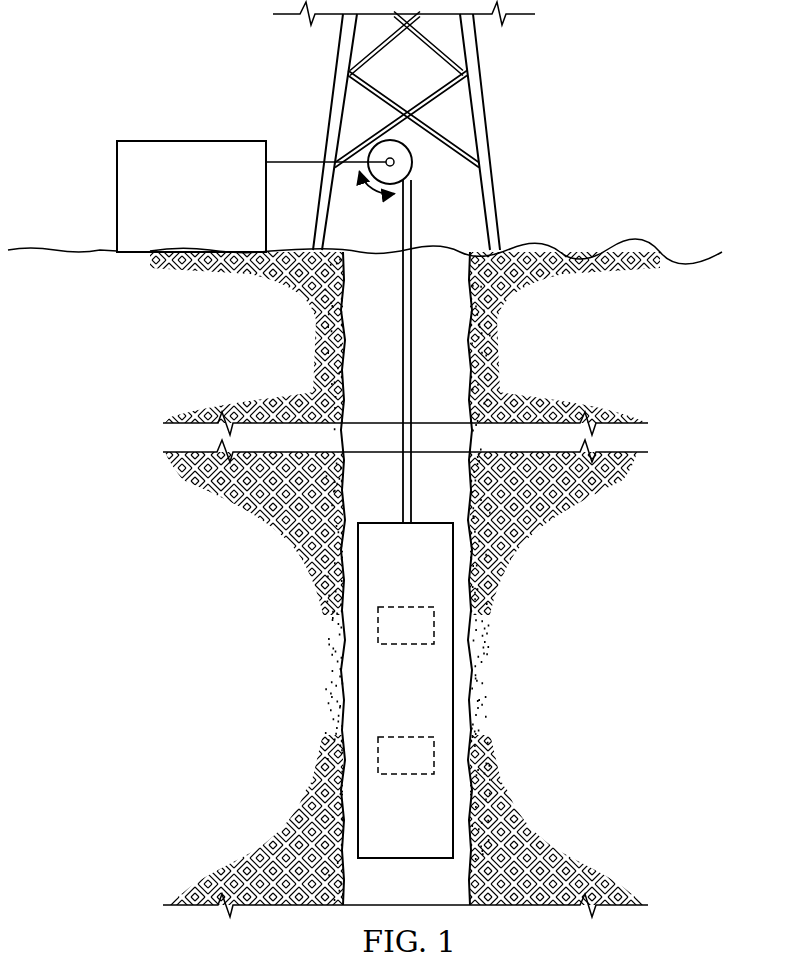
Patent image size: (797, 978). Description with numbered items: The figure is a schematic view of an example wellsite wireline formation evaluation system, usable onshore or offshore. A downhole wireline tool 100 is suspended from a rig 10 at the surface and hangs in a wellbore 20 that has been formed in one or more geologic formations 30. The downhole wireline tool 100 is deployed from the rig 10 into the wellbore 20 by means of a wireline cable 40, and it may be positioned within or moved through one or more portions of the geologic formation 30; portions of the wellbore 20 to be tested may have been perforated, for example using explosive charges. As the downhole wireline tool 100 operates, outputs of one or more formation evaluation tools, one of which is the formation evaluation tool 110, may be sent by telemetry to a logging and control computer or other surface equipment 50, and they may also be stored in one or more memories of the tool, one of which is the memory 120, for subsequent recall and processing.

The rig 10 is at (483, 110).
The wellbore 20 is at (418, 893).
The geologic formation 30 is at (558, 486).
The wireline cable 40 is at (411, 222).
The surface equipment 50 is at (203, 238).
The downhole wireline tool 100 is at (424, 512).
The formation evaluation tool 110 is at (398, 775).
The memory 120 is at (398, 607).